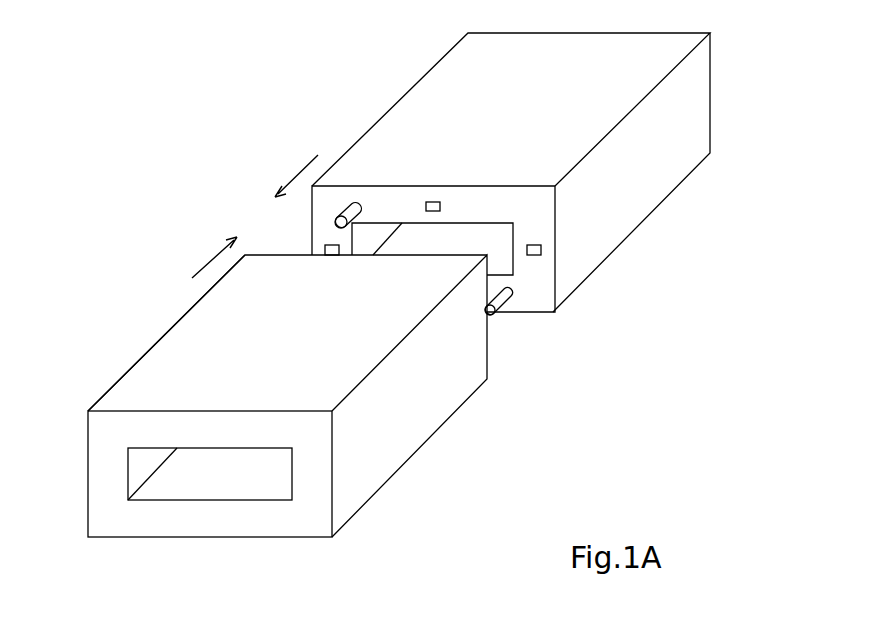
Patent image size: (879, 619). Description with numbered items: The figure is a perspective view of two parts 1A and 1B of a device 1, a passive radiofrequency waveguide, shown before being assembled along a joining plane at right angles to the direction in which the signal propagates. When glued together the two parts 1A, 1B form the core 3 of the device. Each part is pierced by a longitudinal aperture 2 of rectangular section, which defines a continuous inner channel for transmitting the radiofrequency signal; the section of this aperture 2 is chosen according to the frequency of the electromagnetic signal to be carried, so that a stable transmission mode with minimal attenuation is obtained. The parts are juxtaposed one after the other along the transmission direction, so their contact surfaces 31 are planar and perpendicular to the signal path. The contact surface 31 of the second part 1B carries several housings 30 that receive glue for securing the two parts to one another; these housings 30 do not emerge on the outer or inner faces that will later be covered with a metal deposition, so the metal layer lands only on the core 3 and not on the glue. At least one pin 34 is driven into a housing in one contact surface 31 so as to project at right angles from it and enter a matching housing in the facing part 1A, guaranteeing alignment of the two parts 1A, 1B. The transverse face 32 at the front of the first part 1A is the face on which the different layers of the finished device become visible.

The device 1 is at (125, 120).
The first part 1A is at (422, 423).
The second part 1B is at (658, 170).
The longitudinal aperture 2 is at (242, 492).
The core 3 is at (130, 522).
The housings 30 is at (339, 249).
The contact surfaces 31 is at (502, 200).
The transverse face 32 is at (142, 355).
The pin 34 is at (337, 217).